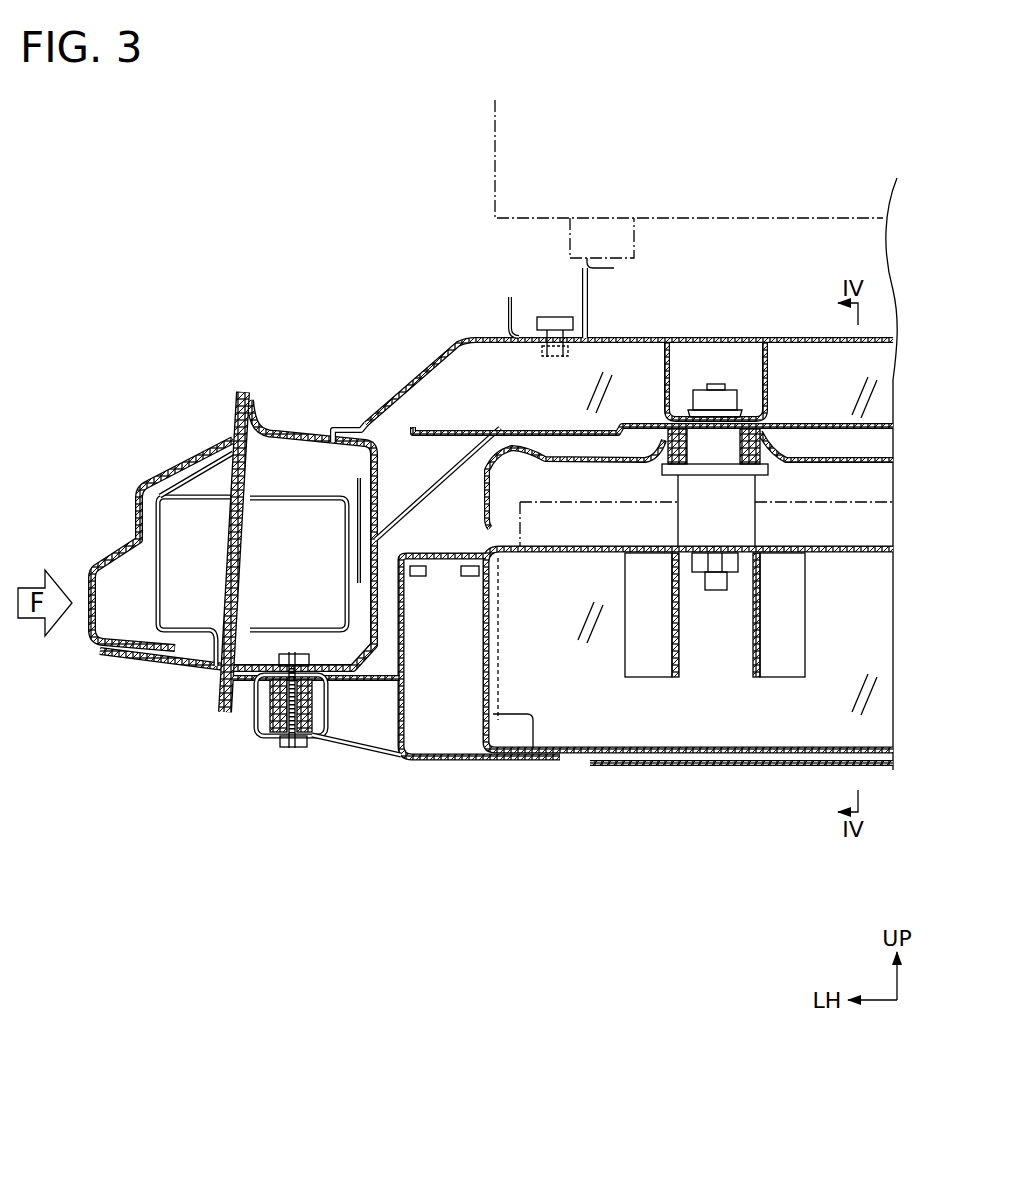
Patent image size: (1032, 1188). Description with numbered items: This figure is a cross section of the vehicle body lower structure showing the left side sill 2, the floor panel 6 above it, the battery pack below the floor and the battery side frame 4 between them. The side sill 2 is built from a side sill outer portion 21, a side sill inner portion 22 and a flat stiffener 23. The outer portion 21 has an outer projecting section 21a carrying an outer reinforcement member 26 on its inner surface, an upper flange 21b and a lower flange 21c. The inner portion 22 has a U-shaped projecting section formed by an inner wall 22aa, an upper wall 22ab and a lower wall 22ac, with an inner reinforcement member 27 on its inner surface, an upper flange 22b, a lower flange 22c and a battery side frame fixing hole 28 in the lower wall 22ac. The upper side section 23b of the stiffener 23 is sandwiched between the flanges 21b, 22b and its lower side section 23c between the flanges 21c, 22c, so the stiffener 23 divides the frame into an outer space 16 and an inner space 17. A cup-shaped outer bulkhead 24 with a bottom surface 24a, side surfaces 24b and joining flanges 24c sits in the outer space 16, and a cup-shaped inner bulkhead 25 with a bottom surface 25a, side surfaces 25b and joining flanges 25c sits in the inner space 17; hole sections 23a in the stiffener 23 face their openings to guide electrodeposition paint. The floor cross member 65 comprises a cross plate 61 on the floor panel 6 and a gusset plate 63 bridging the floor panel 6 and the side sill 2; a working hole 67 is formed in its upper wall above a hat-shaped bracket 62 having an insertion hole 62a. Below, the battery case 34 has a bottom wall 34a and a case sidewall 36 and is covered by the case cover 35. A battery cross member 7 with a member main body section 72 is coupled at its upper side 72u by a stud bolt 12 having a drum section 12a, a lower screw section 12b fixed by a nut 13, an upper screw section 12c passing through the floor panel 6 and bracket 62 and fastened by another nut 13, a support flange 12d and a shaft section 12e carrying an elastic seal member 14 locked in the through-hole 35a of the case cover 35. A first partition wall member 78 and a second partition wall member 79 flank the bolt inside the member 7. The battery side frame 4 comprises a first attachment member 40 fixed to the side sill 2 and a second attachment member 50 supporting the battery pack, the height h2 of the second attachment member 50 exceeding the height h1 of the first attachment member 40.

The side sill 2 is at (120, 451).
The battery side frame 4 is at (330, 862).
The floor panel 6 is at (497, 420).
The battery cross member 7 is at (876, 543).
The stud bolt 12 is at (670, 517).
The drum section 12a is at (745, 530).
The lower screw section 12b is at (713, 588).
The upper screw section 12c is at (713, 385).
The support flange 12d is at (757, 470).
The small shaft section 12e is at (700, 447).
The nut 13 is at (738, 398).
The elastic seal member 14 is at (778, 447).
The outer space 16 is at (200, 482).
The inner space 17 is at (269, 480).
The side sill outer portion 21 is at (128, 522).
The outer projecting section 21a is at (104, 556).
The upper flange 21b is at (236, 425).
The lower flange 21c is at (233, 666).
The side sill inner portion 22 is at (298, 432).
The inner wall 22aa is at (375, 502).
The upper wall 22ab is at (360, 425).
The lower wall 22ac is at (203, 668).
The upper flange 22b is at (253, 410).
The lower flange 22c is at (241, 707).
The stiffener 23 is at (247, 490).
The hole sections 23a is at (243, 526).
The upper side section 23b is at (243, 392).
The lower side section 23c is at (218, 712).
The outer bulkhead 24 is at (168, 547).
The bottom surface 24a is at (153, 588).
The side surfaces 24b is at (198, 648).
The joining flanges 24c is at (228, 455).
The inner bulkhead 25 is at (341, 563).
The bottom surface 25a is at (340, 572).
The side surfaces 25b is at (262, 624).
The joining flanges 25c is at (254, 488).
The outer reinforcement member 26 is at (84, 612).
The inner reinforcement member 27 is at (358, 483).
The battery side frame fixing hole 28 is at (322, 700).
The battery case 34 is at (650, 768).
The bottom wall 34a is at (700, 752).
The case cover 35 is at (557, 460).
The through-hole 35a is at (683, 415).
The case sidewall 36 is at (550, 752).
The first attachment member 40 is at (357, 750).
The second attachment member 50 is at (393, 720).
The cross plate 61 is at (485, 338).
The bracket 62 is at (768, 385).
The insertion hole 62a is at (713, 420).
The gusset plate 63 is at (442, 488).
The floor cross member 65 is at (817, 340).
The working hole 67 is at (705, 340).
The member main body section 72 is at (840, 553).
The upper side 72u is at (563, 546).
The first partition wall member 78 is at (680, 668).
The second partition wall member 79 is at (754, 666).
The height of first attachment member h1 is at (372, 684).
The height of second attachment member h2 is at (455, 570).